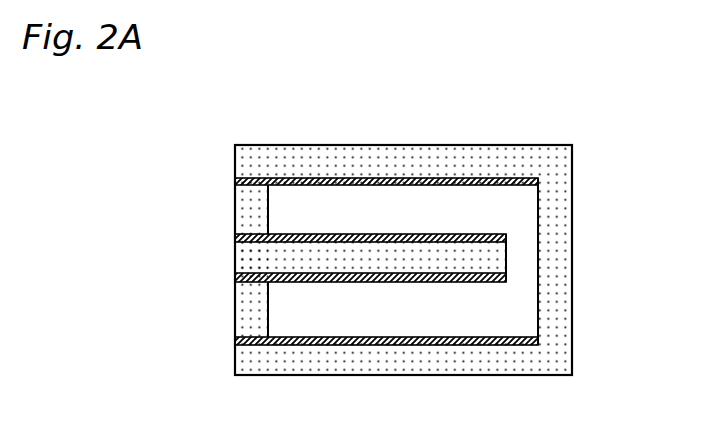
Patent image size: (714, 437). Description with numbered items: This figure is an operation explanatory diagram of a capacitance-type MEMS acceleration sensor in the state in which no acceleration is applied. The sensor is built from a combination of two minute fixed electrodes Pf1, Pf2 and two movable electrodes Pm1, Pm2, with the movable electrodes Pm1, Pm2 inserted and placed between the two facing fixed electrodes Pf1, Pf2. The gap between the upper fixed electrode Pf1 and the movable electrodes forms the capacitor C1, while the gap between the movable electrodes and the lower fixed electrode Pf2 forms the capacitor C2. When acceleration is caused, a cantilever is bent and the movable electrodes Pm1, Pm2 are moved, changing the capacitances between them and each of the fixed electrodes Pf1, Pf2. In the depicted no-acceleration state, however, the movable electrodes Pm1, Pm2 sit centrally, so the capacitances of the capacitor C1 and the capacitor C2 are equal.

The fixed electrode Pf1 is at (433, 178).
The fixed electrode Pf2 is at (340, 345).
The movable electrode Pm1 is at (290, 234).
The movable electrode Pm2 is at (254, 282).
The capacitor C1 is at (403, 209).
The capacitor C2 is at (403, 309).